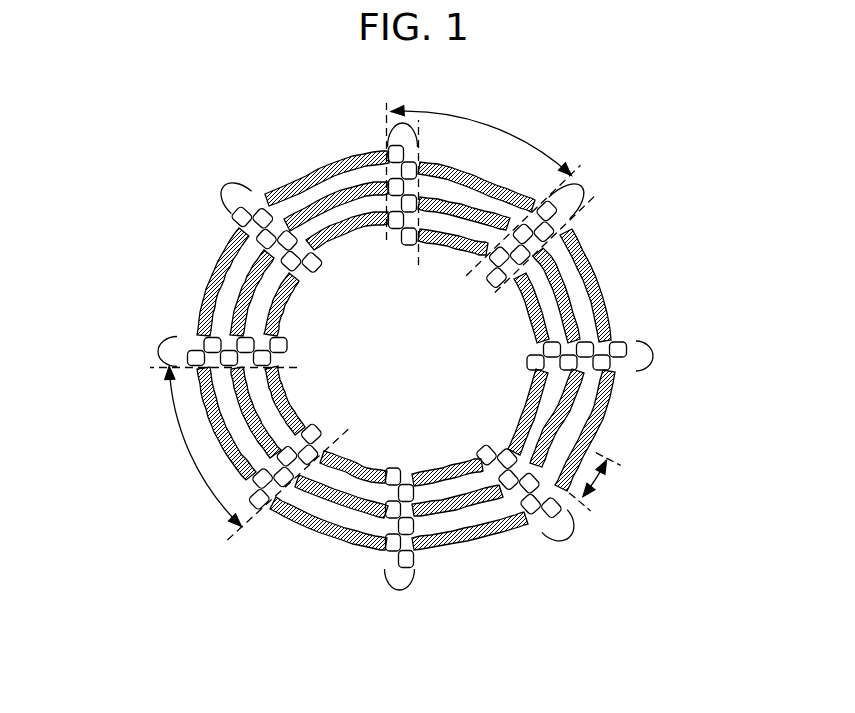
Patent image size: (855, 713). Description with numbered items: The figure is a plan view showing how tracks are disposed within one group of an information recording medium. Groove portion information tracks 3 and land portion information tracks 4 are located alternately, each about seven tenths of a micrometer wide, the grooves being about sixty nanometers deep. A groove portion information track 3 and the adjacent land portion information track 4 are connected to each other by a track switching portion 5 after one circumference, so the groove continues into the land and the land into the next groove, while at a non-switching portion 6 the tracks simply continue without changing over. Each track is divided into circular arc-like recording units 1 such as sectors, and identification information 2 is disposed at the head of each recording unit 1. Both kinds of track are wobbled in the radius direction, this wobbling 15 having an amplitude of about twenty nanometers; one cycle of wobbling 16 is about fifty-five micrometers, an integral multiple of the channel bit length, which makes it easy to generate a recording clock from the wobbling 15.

The recording unit 1 is at (493, 127).
The identification information 2 is at (402, 250).
The groove portion information track 3 is at (590, 256).
The land portion information track 4 is at (592, 304).
The track switching portion 5 is at (388, 121).
The non-switching portion 6 is at (219, 192).
The wobbling 15 is at (614, 400).
The one cycle of wobbling 16 is at (598, 481).